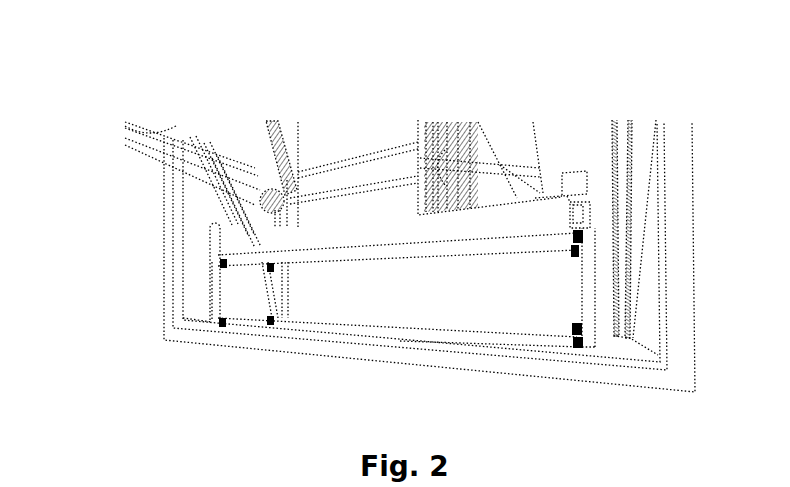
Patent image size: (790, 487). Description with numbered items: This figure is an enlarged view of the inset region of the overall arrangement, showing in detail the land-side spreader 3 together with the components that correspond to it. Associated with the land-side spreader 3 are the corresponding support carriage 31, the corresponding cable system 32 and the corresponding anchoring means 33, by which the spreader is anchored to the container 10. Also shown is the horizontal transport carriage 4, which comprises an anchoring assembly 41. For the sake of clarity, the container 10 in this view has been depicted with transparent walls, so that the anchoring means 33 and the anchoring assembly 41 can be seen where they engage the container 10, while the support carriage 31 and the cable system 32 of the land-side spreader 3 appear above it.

The land-side spreader 3 is at (509, 198).
The horizontal transport carriage 4 is at (593, 384).
The container 10 is at (210, 290).
The support carriage 31 is at (349, 132).
The cable system 32 is at (243, 144).
The anchoring means 33 is at (563, 237).
The anchoring assembly 41 is at (561, 342).